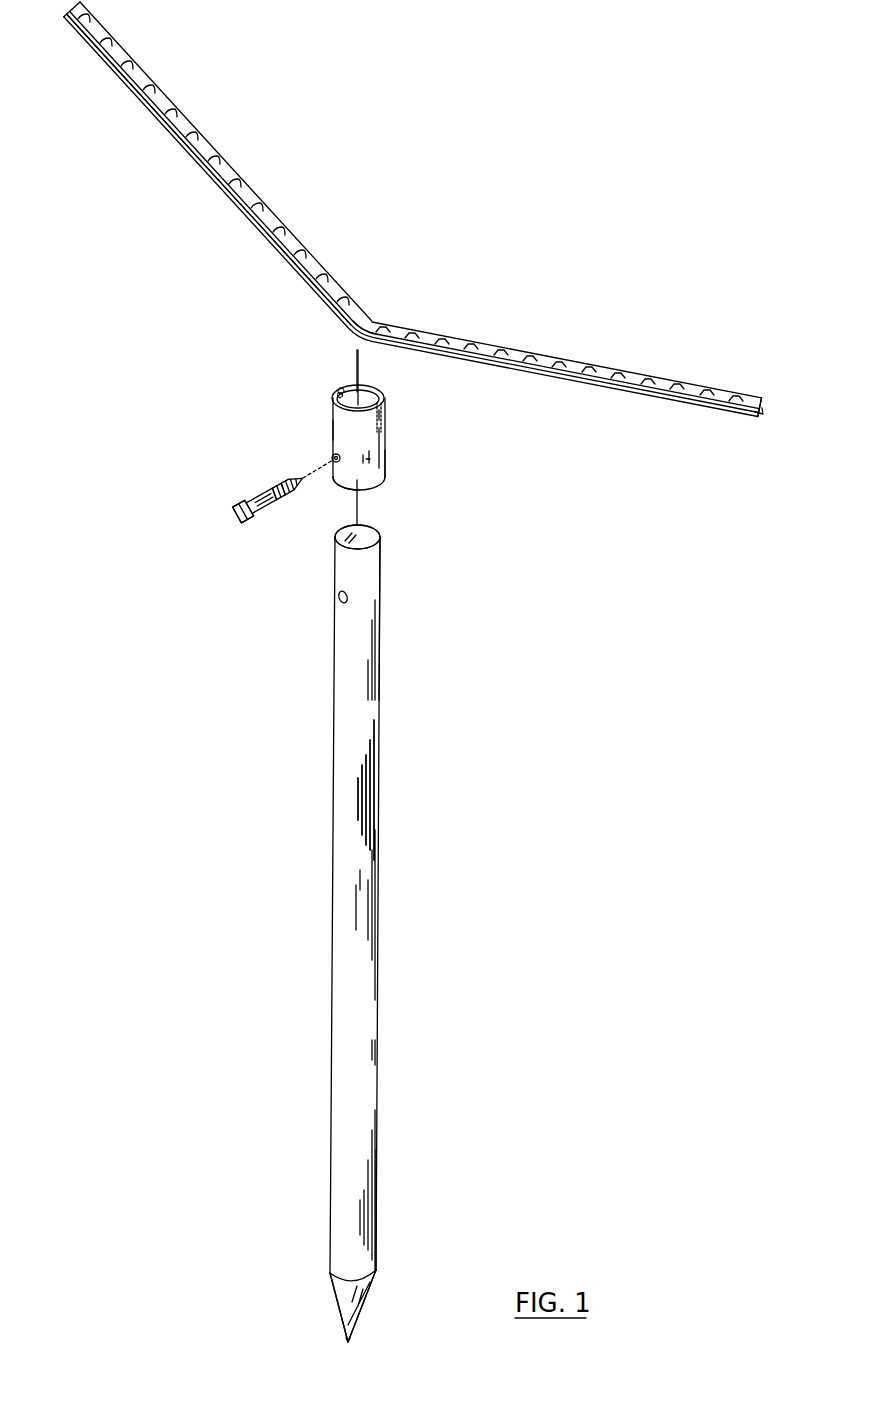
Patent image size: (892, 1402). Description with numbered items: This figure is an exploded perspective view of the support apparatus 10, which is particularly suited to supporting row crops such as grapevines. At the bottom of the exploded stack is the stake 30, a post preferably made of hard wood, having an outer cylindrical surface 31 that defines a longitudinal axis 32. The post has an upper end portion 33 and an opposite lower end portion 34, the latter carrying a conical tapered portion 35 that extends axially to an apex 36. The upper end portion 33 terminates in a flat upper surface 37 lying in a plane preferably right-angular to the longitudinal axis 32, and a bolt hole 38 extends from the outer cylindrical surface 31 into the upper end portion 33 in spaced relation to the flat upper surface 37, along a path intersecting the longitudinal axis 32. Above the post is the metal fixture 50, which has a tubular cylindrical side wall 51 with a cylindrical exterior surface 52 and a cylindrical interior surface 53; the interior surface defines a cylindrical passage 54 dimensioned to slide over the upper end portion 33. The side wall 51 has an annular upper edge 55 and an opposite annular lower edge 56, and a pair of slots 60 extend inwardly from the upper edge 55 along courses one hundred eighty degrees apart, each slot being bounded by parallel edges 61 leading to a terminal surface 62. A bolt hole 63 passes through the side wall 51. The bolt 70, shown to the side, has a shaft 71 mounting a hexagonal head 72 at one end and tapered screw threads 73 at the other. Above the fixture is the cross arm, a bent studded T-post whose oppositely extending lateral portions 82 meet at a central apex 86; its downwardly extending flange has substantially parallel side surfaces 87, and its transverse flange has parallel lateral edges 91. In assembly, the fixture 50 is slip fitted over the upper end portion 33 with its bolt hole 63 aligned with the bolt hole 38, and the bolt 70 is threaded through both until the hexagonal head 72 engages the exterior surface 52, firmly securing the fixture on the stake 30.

The support apparatus 10 is at (224, 557).
The stake 30 is at (321, 736).
The outer cylindrical surface 31 is at (357, 797).
The longitudinal axis 32 is at (357, 511).
The upper end portion 33 is at (382, 572).
The lower end portion 34 is at (375, 1233).
The tapered portion 35 is at (335, 1298).
The apex 36 is at (350, 1343).
The flat upper surface 37 is at (365, 535).
The bolt hole 38 is at (339, 600).
The fixture 50 is at (332, 433).
The tubular cylindrical side wall 51 is at (379, 462).
The cylindrical exterior surface 52 is at (346, 422).
The cylindrical interior surface 53 is at (366, 401).
The cylindrical passage 54 is at (380, 393).
The annular upper edge 55 is at (351, 385).
The annular lower edge 56 is at (345, 480).
The slots 60 is at (338, 394).
The parallel edges 61 is at (341, 388).
The terminal surface 62 is at (348, 420).
The bolt hole 63 is at (331, 457).
The bolt 70 is at (262, 500).
The shaft 71 is at (268, 503).
The hexagonal head 72 is at (230, 519).
The tapered screw threads 73 is at (285, 486).
The lateral portions 82 is at (230, 167).
The central apex 86 is at (373, 323).
The side surfaces 87 is at (763, 408).
The parallel lateral edges 91 is at (268, 210).